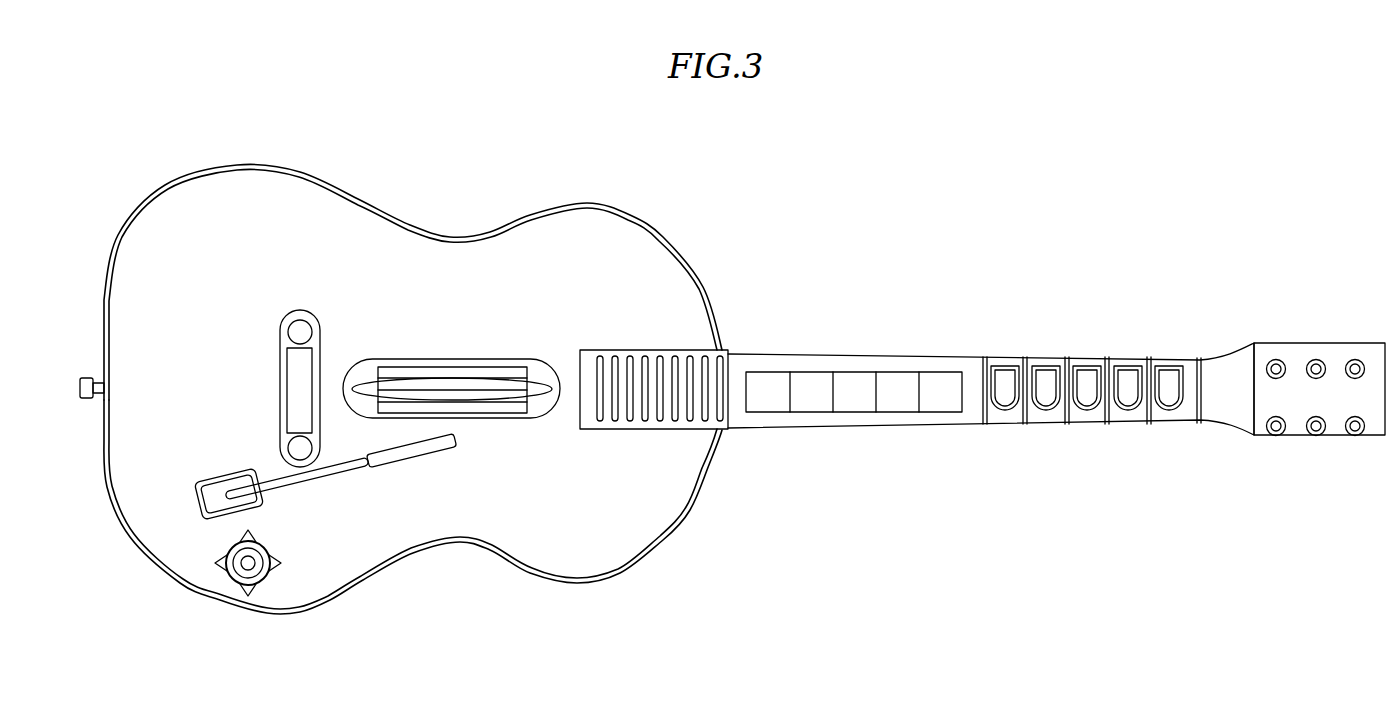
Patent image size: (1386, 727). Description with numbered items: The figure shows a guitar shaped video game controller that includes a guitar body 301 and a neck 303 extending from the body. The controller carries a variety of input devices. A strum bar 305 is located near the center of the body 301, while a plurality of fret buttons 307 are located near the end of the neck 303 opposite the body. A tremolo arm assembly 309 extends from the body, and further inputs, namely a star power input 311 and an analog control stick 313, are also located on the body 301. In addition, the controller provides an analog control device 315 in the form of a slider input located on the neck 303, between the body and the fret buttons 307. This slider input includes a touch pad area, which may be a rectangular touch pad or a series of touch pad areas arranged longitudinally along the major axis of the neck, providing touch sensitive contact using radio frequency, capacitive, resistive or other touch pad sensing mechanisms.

The guitar body 301 is at (327, 184).
The neck 303 is at (1023, 416).
The strum bar 305 is at (478, 366).
The fret buttons 307 is at (1003, 382).
The tremolo arm assembly 309 is at (423, 458).
The star power input 311 is at (280, 387).
The analog control stick 313 is at (265, 572).
The analog control device 315 is at (853, 390).